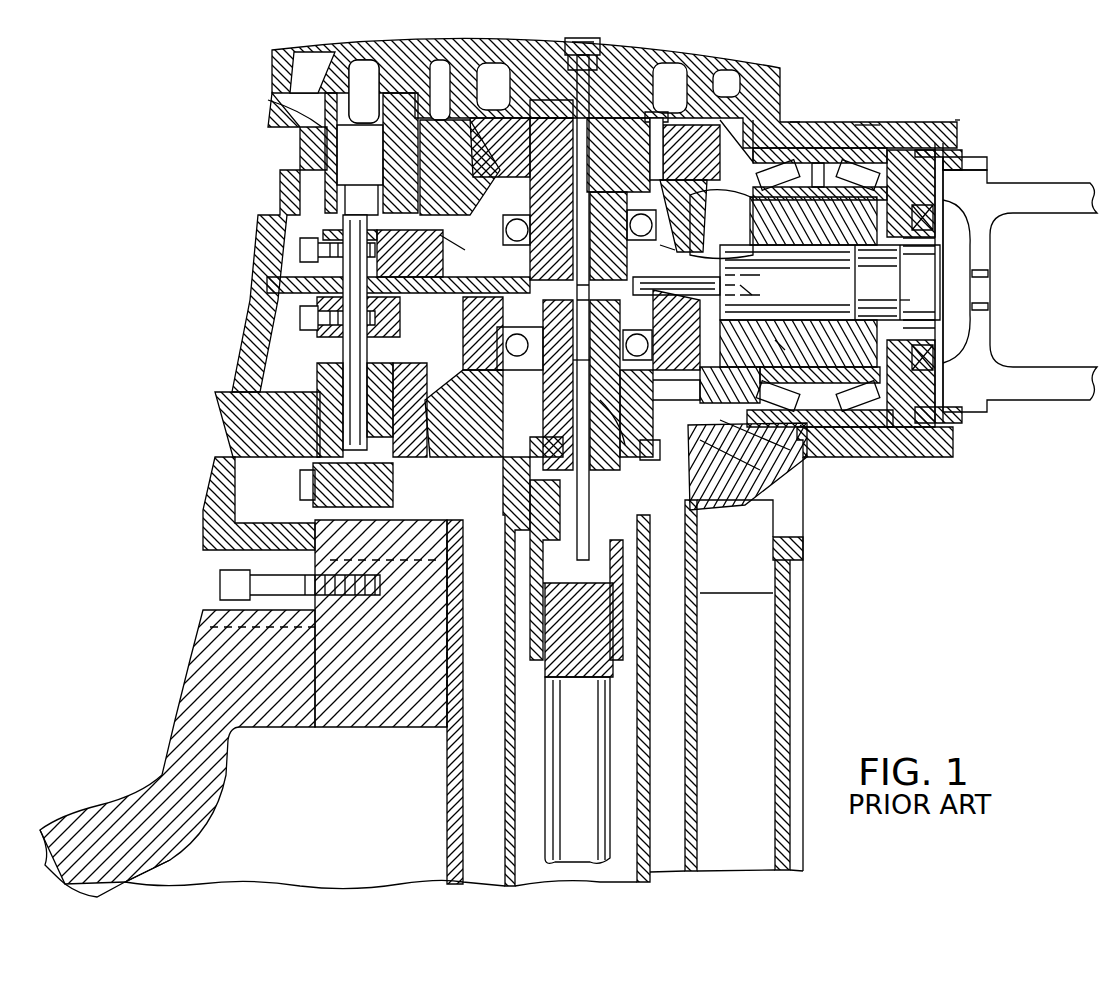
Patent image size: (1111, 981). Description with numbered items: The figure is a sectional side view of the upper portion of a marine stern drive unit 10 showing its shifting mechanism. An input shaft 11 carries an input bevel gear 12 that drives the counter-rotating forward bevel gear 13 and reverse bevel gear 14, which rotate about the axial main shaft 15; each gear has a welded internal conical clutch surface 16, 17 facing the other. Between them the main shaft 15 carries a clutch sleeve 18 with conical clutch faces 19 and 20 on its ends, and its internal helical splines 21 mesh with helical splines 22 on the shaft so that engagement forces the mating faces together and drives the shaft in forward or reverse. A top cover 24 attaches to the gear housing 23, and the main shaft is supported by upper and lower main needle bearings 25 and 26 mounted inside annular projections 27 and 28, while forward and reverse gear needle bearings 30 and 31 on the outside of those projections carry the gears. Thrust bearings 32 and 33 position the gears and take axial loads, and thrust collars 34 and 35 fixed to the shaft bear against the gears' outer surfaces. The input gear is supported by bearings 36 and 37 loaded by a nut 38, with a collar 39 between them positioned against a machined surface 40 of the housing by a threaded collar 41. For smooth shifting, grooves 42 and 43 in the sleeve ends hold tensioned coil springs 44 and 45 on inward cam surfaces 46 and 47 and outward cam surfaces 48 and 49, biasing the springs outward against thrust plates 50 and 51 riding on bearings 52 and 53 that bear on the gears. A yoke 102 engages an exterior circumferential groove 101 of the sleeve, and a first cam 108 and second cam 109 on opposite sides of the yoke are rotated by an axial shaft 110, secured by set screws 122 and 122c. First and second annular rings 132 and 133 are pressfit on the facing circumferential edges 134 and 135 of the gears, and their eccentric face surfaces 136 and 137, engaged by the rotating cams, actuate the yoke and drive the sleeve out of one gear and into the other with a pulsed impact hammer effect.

The marine stern drive unit 10 is at (958, 112).
The input shaft 11 is at (858, 286).
The input bevel gear 12 is at (895, 262).
The forward bevel gear 13 is at (692, 468).
The reverse bevel gear 14 is at (795, 122).
The main shaft 15 is at (560, 785).
The internal conical clutch surface 16 is at (745, 370).
The internal conical clutch surface 17 is at (752, 215).
The clutch sleeve 18 is at (733, 335).
The conical clutch face 19 is at (783, 342).
The conical clutch face 20 is at (757, 260).
The internal helical splines 21 is at (655, 292).
The helical splines 22 is at (592, 295).
The gear housing 23 is at (362, 740).
The top cover 24 is at (548, 45).
The upper main needle bearing 25 is at (622, 168).
The lower main needle bearing 26 is at (600, 432).
The annular projection 27 is at (505, 440).
The annular projection 28 is at (546, 107).
The forward gear needle bearing 30 is at (652, 452).
The reverse gear needle bearing 31 is at (668, 112).
The thrust bearing 32 is at (472, 58).
The thrust bearing 33 is at (728, 437).
The thrust collar 34 is at (645, 505).
The thrust collar 35 is at (672, 165).
The bearing 36 is at (787, 160).
The bearing 37 is at (860, 125).
The nut 38 is at (903, 302).
The collar 39 is at (842, 427).
The surface 40 is at (805, 430).
The threaded collar 41 is at (953, 150).
The groove 42 is at (535, 322).
The groove 43 is at (528, 222).
The coil spring 44 is at (619, 345).
The coil spring 45 is at (633, 222).
The axially inward cam surface 46 is at (536, 348).
The axially inward cam surface 47 is at (745, 288).
The axially outward cam surface 48 is at (520, 490).
The axially outward cam surface 49 is at (665, 248).
The thrust plate 50 is at (586, 372).
The thrust plate 51 is at (478, 188).
The bearing 52 is at (700, 410).
The bearing 53 is at (662, 185).
The exterior circumferential groove 101 is at (738, 310).
The yoke 102 is at (265, 286).
The first cam 108 is at (335, 222).
The second cam 109 is at (337, 360).
The axial shaft 110 is at (353, 342).
The set screw 122 is at (295, 245).
The set screw 122c is at (303, 313).
The first annular ring 132 is at (320, 397).
The second annular ring 133 is at (392, 185).
The facing circumferential edge 134 is at (430, 440).
The facing circumferential edge 135 is at (460, 245).
The eccentric face surface 136 is at (365, 356).
The eccentric face surface 137 is at (450, 262).